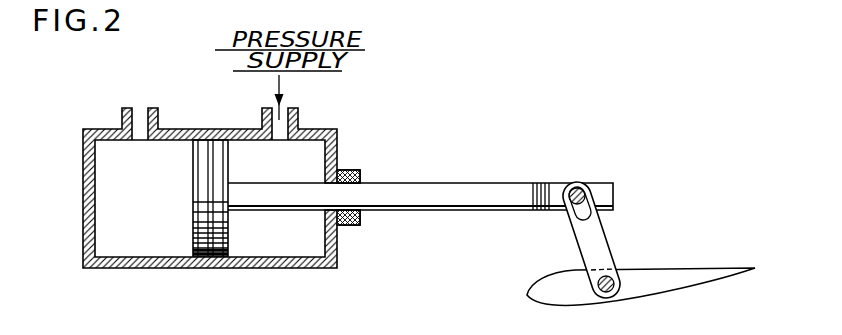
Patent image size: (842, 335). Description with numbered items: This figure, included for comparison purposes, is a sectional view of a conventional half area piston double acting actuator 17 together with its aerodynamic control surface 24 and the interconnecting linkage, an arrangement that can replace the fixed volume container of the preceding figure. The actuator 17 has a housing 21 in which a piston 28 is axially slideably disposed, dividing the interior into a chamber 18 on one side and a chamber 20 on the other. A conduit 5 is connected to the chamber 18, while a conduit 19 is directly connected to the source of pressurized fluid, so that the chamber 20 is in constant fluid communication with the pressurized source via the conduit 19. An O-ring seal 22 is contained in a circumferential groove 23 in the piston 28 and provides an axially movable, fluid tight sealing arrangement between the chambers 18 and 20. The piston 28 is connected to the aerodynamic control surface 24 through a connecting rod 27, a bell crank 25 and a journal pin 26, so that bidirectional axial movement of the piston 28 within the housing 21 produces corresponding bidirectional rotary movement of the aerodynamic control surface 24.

The conduit 5 is at (142, 118).
The actuator 17 is at (157, 268).
The chamber 18 is at (145, 212).
The conduit 19 is at (281, 124).
The chamber 20 is at (300, 238).
The housing 21 is at (90, 266).
The O-ring seal 22 is at (213, 140).
The circumferential groove 23 is at (211, 258).
The aerodynamic control surface 24 is at (551, 291).
The bell crank 25 is at (597, 247).
The journal pin 26 is at (577, 189).
The connecting rod 27 is at (430, 188).
The piston 28 is at (226, 226).